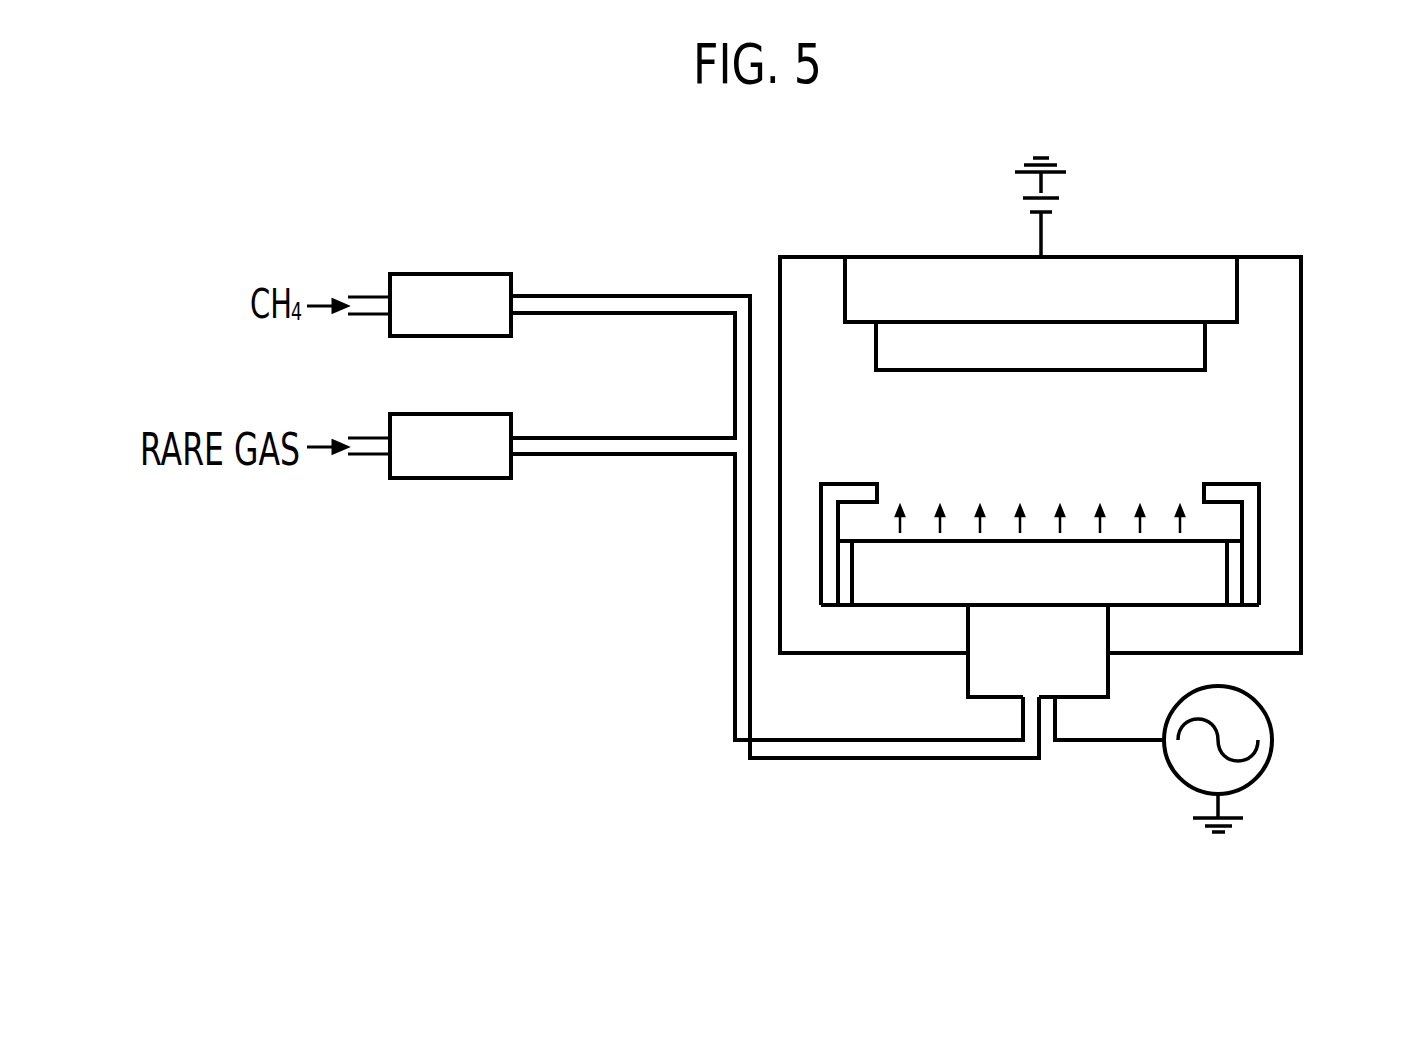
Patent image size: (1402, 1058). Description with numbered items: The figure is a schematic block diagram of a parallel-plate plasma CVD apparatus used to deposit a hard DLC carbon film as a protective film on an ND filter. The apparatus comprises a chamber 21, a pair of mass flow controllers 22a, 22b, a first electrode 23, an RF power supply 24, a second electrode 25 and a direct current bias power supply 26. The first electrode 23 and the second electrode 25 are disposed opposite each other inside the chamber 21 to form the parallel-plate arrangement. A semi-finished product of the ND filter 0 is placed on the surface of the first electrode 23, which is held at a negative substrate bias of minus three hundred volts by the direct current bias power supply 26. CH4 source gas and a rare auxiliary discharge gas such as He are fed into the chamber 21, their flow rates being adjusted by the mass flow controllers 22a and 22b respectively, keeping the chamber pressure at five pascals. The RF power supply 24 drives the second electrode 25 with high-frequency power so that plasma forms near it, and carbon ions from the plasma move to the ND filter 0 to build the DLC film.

The chamber 21 is at (1303, 398).
The mass flow controller 22a is at (448, 274).
The mass flow controller 22b is at (448, 414).
The first electrode 23 is at (1171, 257).
The RF power supply 24 is at (1273, 740).
The second electrode 25 is at (1110, 630).
The direct current bias power supply 26 is at (1043, 232).
The ND filter 0 is at (1207, 347).